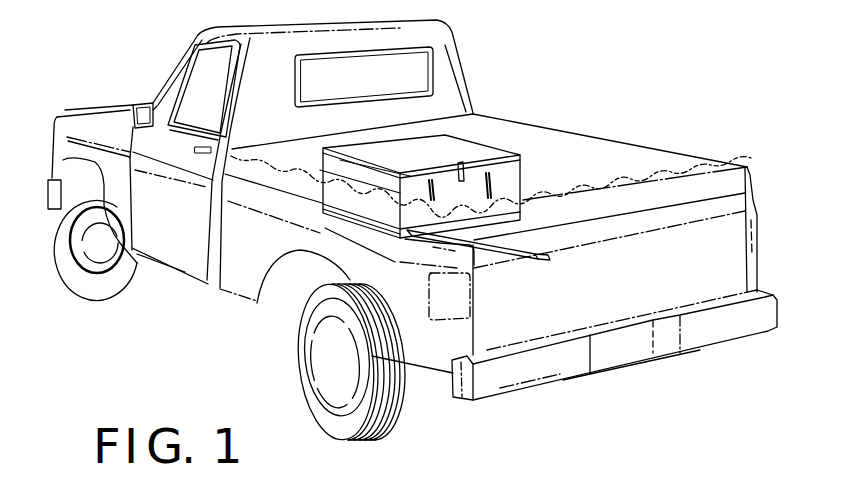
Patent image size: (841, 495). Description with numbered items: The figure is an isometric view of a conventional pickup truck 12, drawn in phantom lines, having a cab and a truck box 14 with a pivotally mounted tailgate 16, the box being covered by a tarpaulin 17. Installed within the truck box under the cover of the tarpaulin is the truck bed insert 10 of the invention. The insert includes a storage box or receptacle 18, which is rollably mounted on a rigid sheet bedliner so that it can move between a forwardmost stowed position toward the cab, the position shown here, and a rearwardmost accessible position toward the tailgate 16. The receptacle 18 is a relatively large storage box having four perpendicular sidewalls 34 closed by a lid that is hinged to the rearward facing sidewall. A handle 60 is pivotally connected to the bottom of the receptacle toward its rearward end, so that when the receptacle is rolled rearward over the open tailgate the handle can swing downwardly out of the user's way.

The truck bed insert 10 is at (600, 88).
The pickup truck 12 is at (472, 60).
The truck box 14 is at (256, 301).
The tailgate 16 is at (722, 248).
The tarpaulin 17 is at (640, 147).
The storage box or receptacle 18 is at (468, 148).
The sidewalls 34 is at (512, 182).
The handle 60 is at (517, 257).